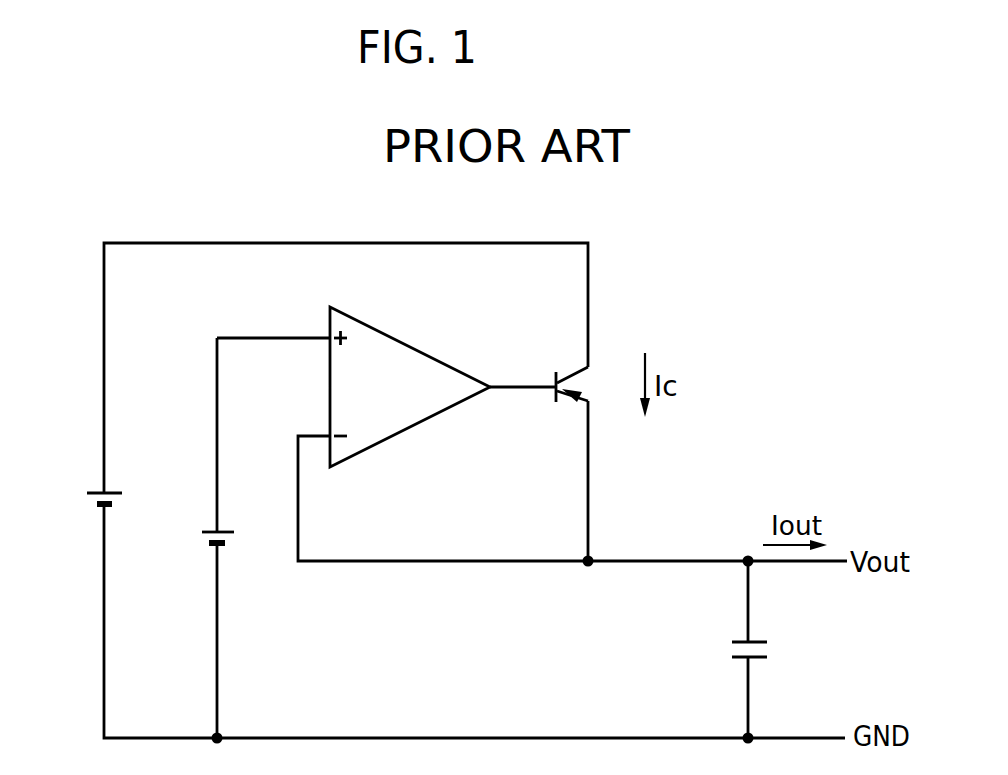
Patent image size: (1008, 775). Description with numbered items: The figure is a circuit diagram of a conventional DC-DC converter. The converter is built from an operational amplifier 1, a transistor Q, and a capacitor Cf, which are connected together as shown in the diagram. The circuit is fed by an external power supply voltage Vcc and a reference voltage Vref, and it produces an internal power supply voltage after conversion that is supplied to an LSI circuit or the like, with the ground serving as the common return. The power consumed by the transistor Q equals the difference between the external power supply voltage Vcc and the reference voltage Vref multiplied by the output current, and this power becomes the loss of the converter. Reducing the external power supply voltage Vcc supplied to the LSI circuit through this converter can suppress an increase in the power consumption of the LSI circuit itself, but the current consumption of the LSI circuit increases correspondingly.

The operational amplifier 1 is at (412, 427).
The transistor Q is at (577, 383).
The capacitor Cf is at (730, 649).
The external power supply voltage Vcc is at (76, 502).
The reference voltage Vref is at (185, 542).